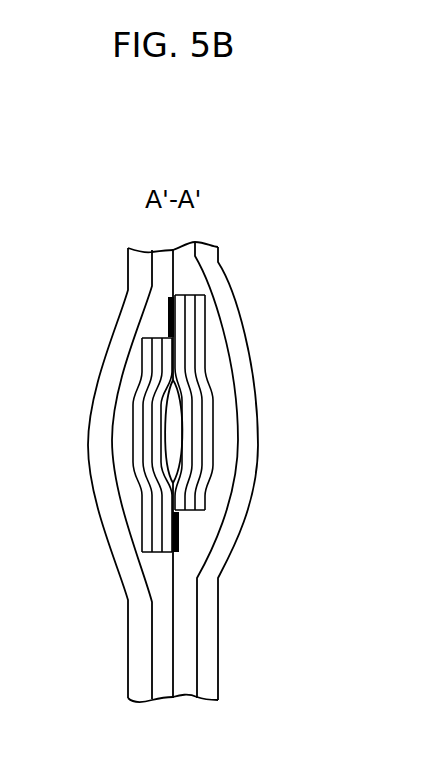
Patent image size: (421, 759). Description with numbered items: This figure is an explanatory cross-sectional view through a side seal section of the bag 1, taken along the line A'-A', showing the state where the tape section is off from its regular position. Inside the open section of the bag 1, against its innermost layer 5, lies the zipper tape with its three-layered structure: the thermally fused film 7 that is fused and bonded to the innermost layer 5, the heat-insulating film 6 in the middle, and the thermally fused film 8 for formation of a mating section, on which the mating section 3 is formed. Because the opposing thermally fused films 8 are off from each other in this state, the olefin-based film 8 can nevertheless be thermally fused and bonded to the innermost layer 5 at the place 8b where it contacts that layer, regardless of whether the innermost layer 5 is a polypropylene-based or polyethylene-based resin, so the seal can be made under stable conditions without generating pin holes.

The bag 1 is at (128, 697).
The mating section 3 is at (180, 402).
The innermost layer 5 is at (162, 660).
The heat-insulating film 6 is at (147, 434).
The thermally fused film 7 is at (143, 471).
The thermally fused film for formation of a mating section 8 is at (160, 410).
The place where the thermally fused film contacts the innermost layer 8b is at (170, 320).